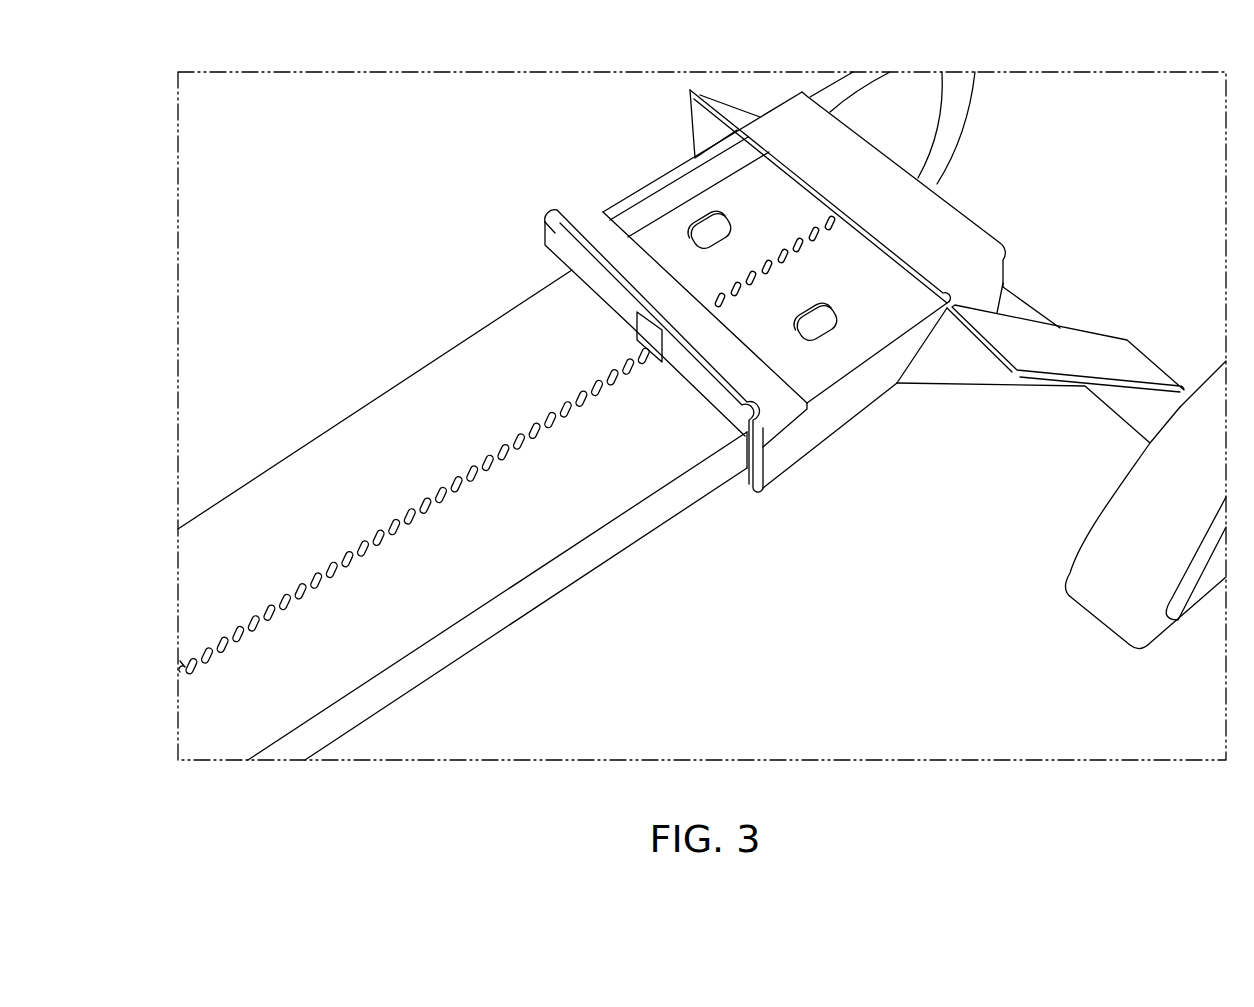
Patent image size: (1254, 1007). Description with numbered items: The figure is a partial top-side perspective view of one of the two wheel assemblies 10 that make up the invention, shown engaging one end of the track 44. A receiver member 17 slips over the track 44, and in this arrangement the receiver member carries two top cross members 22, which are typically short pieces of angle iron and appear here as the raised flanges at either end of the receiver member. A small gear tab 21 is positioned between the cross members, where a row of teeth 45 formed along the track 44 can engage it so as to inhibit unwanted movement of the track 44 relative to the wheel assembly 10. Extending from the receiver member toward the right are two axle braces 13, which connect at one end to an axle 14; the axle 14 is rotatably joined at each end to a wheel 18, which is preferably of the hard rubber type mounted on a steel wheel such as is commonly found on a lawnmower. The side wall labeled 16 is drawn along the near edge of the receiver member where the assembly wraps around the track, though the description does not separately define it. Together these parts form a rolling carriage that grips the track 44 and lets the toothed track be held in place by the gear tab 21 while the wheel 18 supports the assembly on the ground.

The wheel assembly 10 is at (1024, 139).
The axle brace 13 is at (1080, 355).
The axle 14 is at (1120, 412).
The side wall 16 is at (840, 420).
The receiver member 17 is at (528, 258).
The wheel 18 is at (1130, 630).
The gear tab 21 is at (637, 310).
The top cross member 22 is at (553, 233).
The track 44 is at (300, 462).
The teeth 45 is at (403, 519).